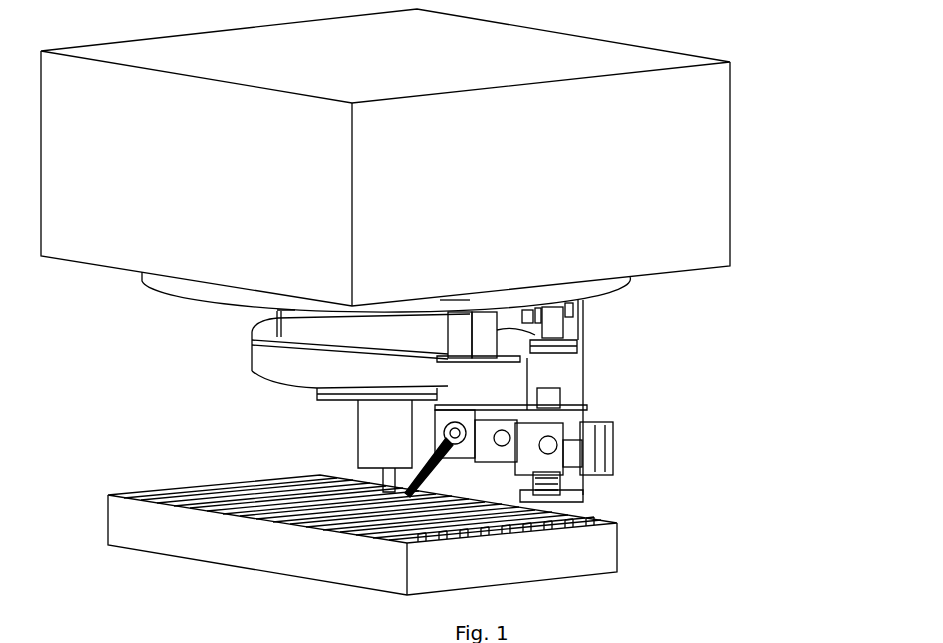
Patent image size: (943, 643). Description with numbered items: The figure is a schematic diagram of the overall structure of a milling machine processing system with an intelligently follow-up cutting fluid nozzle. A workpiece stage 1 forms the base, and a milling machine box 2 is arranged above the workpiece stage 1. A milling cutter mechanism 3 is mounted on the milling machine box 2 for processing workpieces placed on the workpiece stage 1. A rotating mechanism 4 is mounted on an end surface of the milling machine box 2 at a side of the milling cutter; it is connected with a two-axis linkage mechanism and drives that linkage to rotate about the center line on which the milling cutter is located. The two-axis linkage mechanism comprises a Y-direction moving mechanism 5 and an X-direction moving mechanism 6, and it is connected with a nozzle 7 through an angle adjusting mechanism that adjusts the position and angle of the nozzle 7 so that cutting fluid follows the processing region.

The workpiece stage 1 is at (585, 560).
The milling machine box 2 is at (678, 108).
The milling cutter mechanism 3 is at (372, 437).
The rotating mechanism 4 is at (517, 300).
The Y-direction moving mechanism 5 is at (575, 391).
The X-direction moving mechanism 6 is at (613, 447).
The nozzle 7 is at (355, 468).